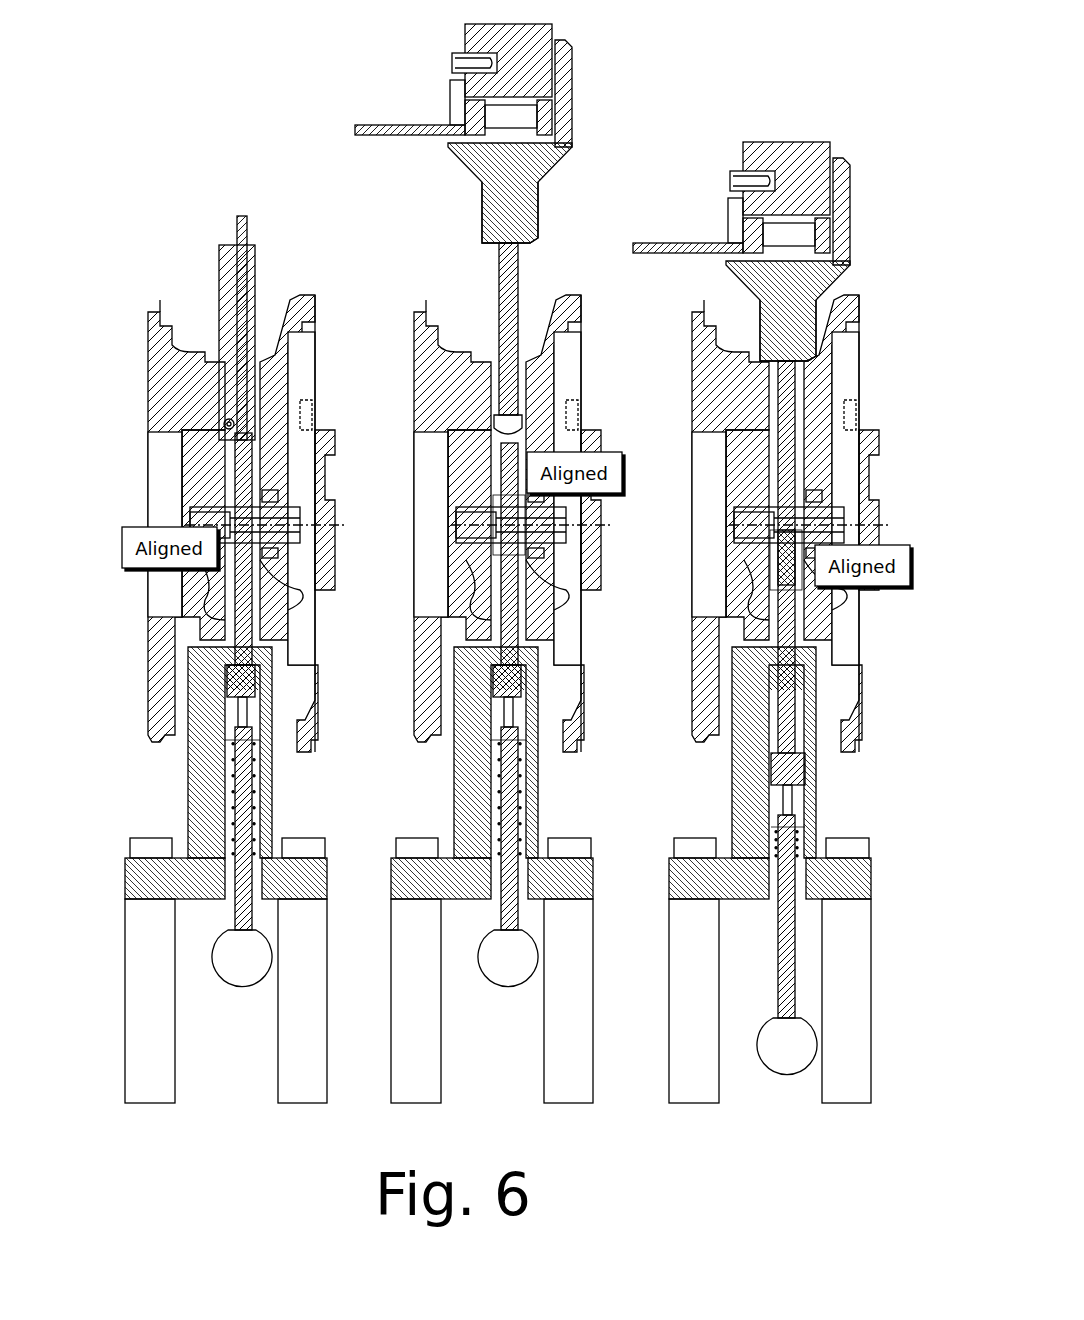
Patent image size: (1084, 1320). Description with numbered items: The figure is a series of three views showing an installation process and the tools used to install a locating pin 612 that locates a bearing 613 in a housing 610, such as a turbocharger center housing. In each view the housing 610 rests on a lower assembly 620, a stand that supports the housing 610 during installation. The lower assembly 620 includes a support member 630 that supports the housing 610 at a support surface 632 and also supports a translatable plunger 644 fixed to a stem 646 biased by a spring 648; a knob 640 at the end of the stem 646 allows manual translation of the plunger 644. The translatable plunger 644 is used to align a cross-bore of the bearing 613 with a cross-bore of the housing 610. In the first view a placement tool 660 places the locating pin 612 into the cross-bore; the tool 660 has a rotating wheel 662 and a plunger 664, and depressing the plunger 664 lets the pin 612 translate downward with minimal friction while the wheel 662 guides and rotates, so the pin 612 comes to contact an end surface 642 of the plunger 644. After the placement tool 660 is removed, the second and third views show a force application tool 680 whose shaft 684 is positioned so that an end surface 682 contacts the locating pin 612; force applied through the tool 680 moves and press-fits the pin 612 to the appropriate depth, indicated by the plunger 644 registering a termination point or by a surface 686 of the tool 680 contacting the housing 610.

The housing 610 is at (150, 298).
The locating pin 612 is at (232, 450).
The bearing 613 is at (200, 508).
The lower assembly 620 is at (140, 1117).
The support member 630 is at (268, 795).
The support surface 632 is at (190, 648).
The knob 640 is at (242, 987).
The end surface 642 is at (492, 515).
The translatable plunger 644 is at (237, 720).
The stem 646 is at (244, 757).
The spring 648 is at (232, 795).
The placement tool 660 is at (176, 236).
The rotating wheel 662 is at (224, 420).
The plunger 664 is at (240, 218).
The force application tool 680 is at (436, 37).
The end surface 682 is at (505, 418).
The shaft 684 is at (500, 300).
The surface 686 is at (482, 240).